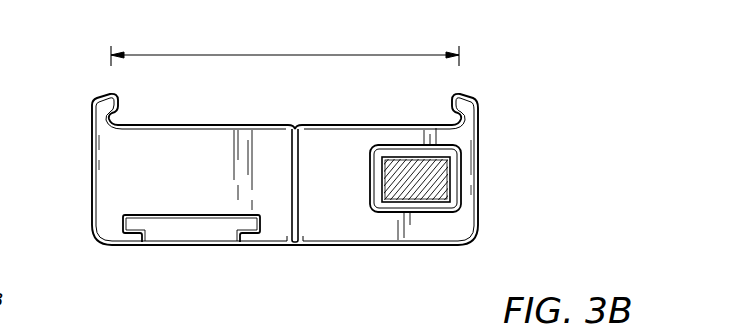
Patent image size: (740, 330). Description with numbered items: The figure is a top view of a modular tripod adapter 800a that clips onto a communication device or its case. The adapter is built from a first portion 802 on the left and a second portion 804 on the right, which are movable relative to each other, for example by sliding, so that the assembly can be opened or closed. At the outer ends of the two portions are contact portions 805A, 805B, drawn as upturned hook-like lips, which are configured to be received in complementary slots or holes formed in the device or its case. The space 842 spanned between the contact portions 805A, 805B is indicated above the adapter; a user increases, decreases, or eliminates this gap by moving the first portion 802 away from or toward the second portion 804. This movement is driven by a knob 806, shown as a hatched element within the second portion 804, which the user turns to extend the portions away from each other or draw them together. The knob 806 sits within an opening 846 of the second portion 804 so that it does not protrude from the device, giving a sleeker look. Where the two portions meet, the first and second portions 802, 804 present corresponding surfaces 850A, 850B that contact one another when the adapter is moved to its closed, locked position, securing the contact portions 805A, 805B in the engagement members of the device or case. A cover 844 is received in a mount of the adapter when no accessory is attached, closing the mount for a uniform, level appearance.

The tripod adapter 800a is at (488, 232).
The first portion 802 is at (167, 138).
The second portion 804 is at (328, 137).
The contact portion 805A is at (92, 106).
The contact portion 805B is at (478, 104).
The knob 806 is at (447, 175).
The space 842 is at (291, 50).
The cover 844 is at (172, 237).
The opening 846 is at (462, 207).
The corresponding surface 850A is at (288, 216).
The corresponding surface 850B is at (295, 205).